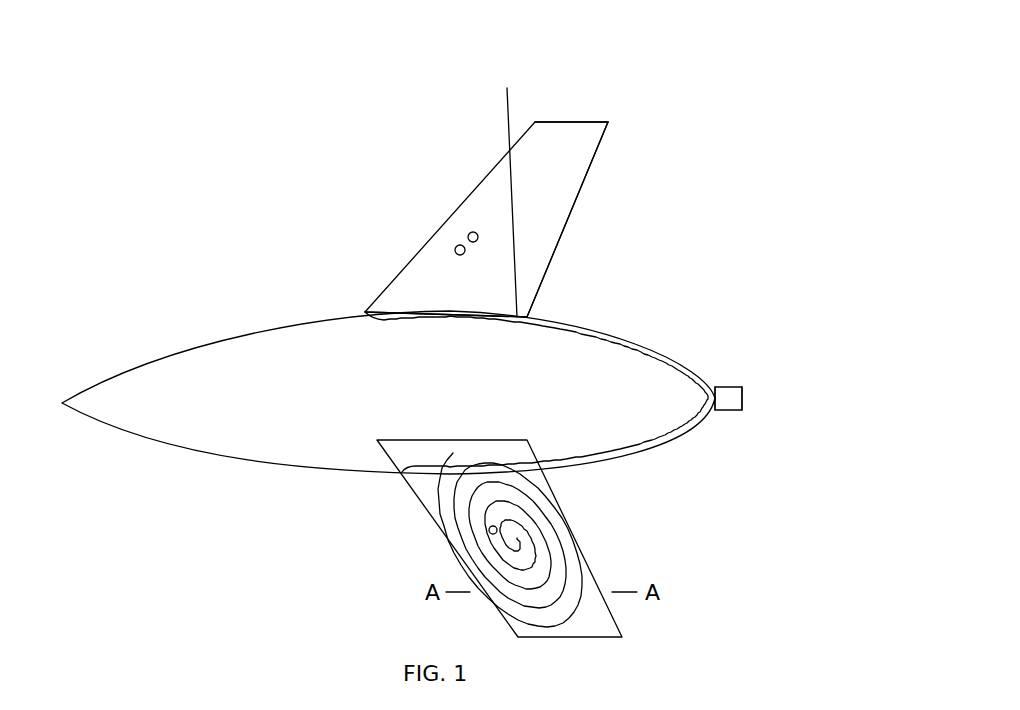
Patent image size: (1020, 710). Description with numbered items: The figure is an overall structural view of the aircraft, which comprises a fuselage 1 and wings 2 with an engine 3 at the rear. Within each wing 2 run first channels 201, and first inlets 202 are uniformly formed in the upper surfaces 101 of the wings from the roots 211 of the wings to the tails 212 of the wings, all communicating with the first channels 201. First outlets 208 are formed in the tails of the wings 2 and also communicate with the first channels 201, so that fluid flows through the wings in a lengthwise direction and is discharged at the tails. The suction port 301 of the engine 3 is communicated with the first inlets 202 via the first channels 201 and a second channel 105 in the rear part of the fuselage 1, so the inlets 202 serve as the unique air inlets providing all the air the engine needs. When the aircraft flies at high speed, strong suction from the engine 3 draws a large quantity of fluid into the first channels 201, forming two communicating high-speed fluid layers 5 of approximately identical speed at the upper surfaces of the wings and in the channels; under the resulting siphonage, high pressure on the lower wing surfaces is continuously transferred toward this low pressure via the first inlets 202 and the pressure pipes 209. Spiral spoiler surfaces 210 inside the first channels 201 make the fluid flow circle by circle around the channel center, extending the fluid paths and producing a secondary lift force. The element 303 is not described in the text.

The fuselage 1 is at (281, 315).
The upper surfaces of the wings 101 is at (483, 203).
The second channel 105 is at (608, 328).
The wings 2 is at (422, 537).
The first channels 201 is at (528, 130).
The first inlets 202 is at (456, 247).
The first outlets 208 is at (553, 122).
The pressure pipes 209 is at (489, 530).
The spiral spoiler surfaces 210 is at (567, 553).
The roots of the wings 211 is at (433, 308).
The tails of the wings 212 is at (590, 128).
The engine 3 is at (734, 380).
The suction port 301 is at (715, 410).
The propeller housing 303 is at (743, 404).
The high-speed fluid layers 5 is at (443, 288).